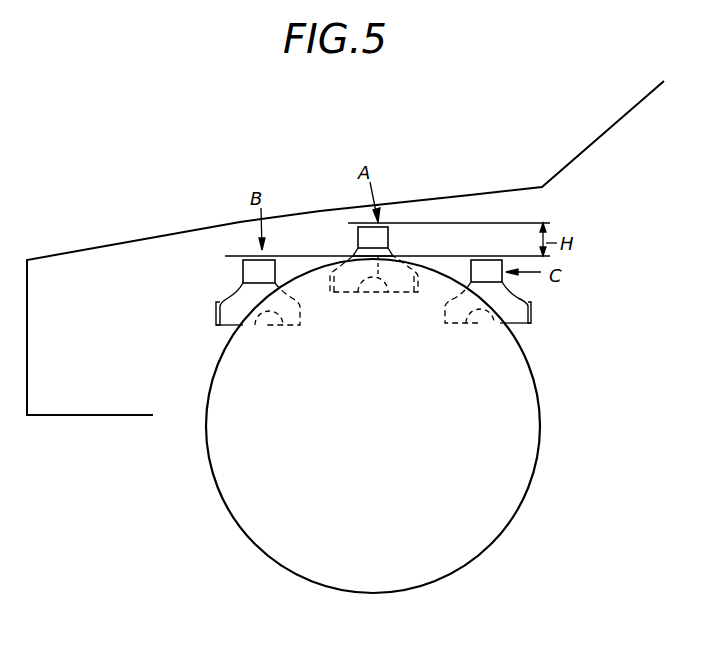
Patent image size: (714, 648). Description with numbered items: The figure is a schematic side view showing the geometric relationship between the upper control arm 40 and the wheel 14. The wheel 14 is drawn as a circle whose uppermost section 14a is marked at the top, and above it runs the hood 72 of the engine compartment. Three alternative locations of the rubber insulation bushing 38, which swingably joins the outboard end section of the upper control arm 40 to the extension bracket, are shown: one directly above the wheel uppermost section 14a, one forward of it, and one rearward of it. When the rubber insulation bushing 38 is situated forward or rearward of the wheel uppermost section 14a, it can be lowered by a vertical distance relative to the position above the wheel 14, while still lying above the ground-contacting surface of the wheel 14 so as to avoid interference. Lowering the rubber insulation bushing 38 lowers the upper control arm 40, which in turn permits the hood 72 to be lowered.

The hood 72 is at (201, 228).
The wheel 14 is at (526, 453).
The uppermost section of the wheel 14a is at (378, 262).
The rubber insulation bushing 38 is at (246, 272).
The upper control arm 40 is at (230, 293).